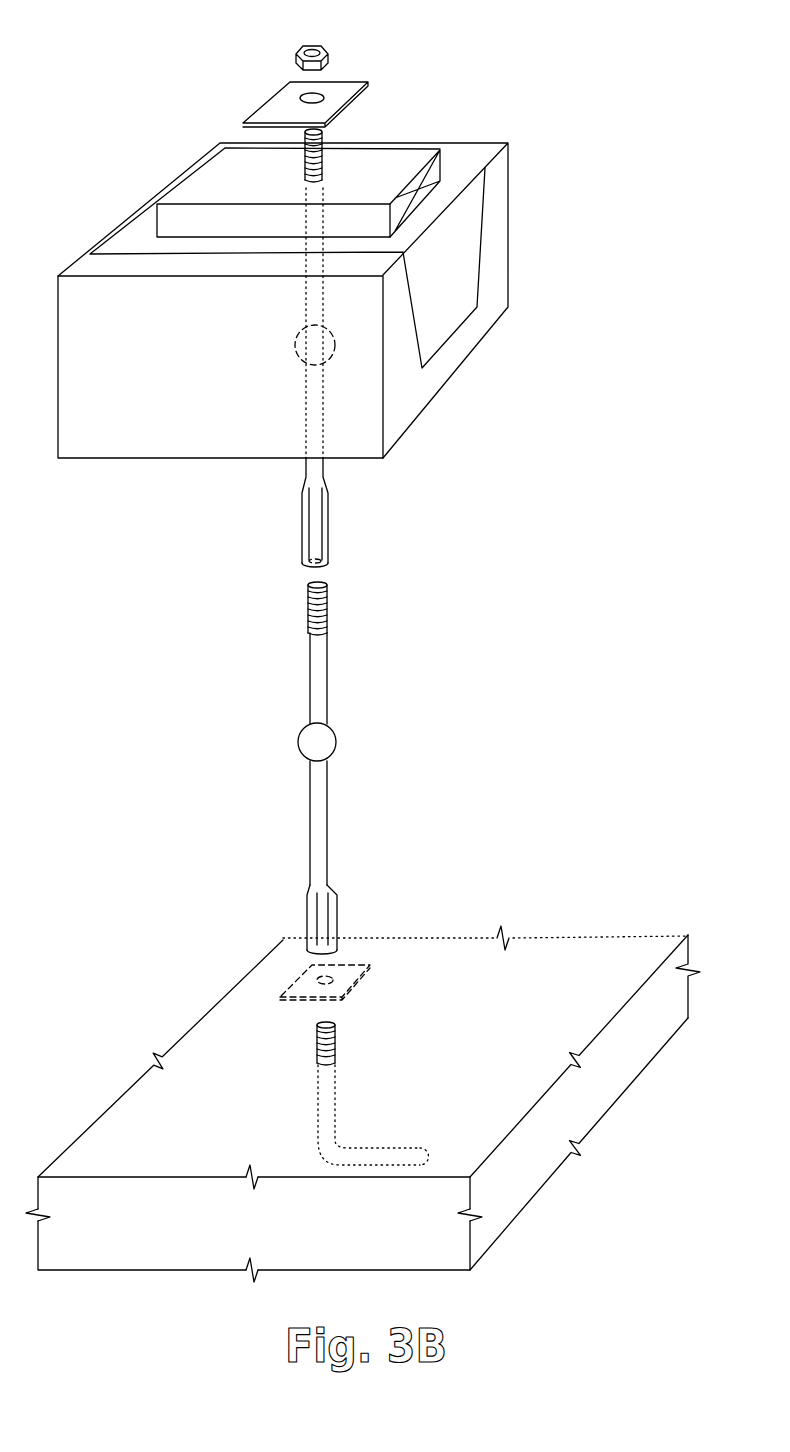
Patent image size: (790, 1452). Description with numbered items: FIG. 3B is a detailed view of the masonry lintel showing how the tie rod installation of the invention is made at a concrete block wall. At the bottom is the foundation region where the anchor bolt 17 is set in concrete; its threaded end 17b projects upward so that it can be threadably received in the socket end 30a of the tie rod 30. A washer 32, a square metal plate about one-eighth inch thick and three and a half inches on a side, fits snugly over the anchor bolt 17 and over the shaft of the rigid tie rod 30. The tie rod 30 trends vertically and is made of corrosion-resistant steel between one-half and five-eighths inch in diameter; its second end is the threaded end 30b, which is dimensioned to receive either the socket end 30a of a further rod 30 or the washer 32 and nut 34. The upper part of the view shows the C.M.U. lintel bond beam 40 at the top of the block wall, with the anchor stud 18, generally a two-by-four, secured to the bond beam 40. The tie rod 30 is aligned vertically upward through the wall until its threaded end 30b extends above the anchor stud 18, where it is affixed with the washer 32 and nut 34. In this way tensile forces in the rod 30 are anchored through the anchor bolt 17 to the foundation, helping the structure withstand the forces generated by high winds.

The anchor bolt 17 is at (335, 1122).
The threaded end 17b is at (310, 1045).
The anchor stud 18 is at (277, 191).
The tie rod 30 is at (338, 318).
The socket end 30a is at (303, 527).
The threaded end 30b is at (321, 138).
The washer 32 is at (277, 103).
The nut 34 is at (329, 58).
The C.M.U. lintel bond beam 40 is at (223, 382).